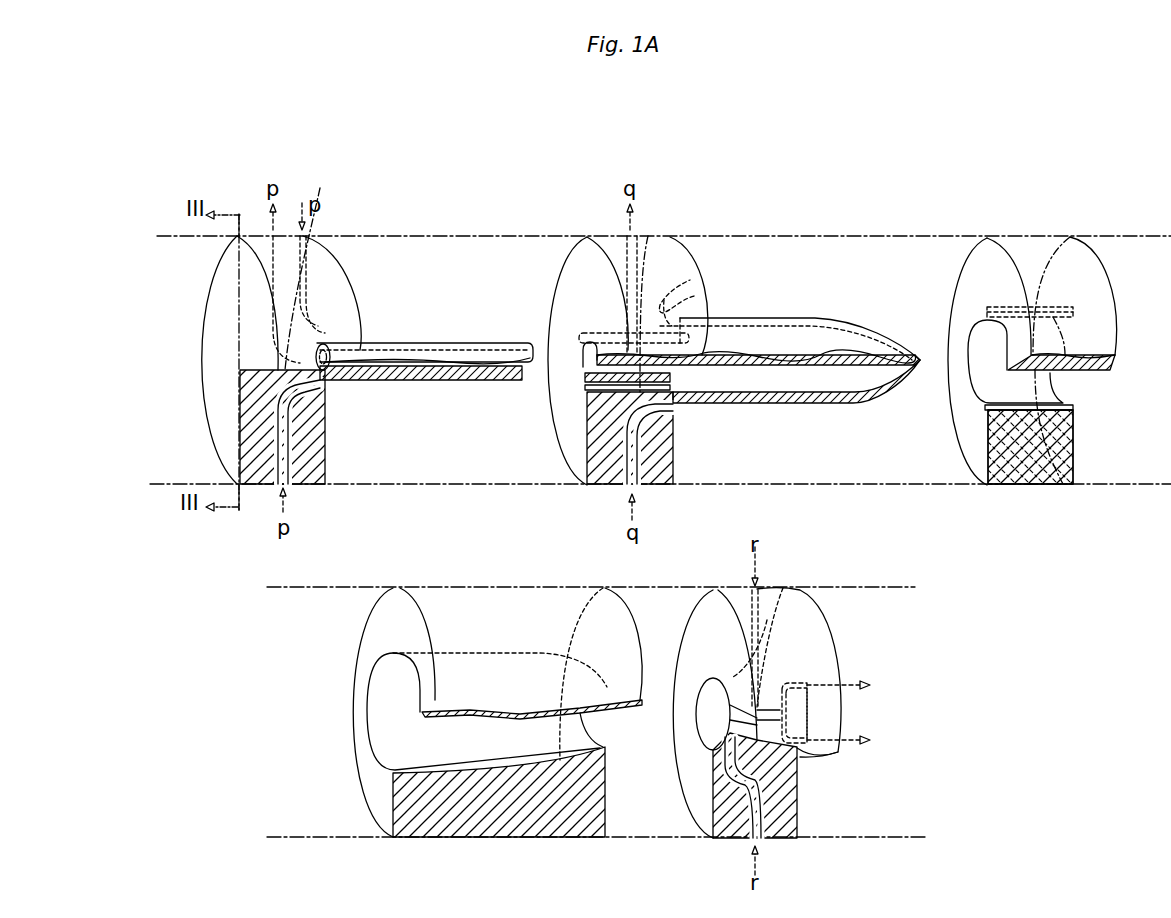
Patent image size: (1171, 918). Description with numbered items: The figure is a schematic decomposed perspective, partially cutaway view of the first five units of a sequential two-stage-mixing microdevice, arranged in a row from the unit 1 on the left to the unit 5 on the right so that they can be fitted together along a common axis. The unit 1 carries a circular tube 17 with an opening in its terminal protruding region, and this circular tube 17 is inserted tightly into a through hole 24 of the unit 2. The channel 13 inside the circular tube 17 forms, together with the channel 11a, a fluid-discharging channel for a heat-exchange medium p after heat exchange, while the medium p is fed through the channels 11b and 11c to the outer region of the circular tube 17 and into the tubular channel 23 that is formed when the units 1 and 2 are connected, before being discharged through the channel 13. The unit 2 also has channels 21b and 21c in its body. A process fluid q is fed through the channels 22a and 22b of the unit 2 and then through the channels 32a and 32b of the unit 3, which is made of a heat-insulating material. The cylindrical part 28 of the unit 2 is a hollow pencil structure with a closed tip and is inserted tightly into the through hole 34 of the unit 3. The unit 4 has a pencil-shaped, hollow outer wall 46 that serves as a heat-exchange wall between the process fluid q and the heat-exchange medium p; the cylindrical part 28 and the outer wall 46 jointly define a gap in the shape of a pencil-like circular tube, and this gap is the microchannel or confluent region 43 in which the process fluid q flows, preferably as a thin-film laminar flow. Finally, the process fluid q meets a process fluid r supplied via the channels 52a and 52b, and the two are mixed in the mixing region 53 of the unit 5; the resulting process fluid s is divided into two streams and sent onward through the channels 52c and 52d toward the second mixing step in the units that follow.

The unit 1 is at (367, 333).
The channel 11a is at (320, 190).
The channel 11b is at (303, 294).
The channel 11c is at (284, 437).
The channel 13 is at (405, 368).
The circular tube 17 is at (412, 352).
The unit 2 is at (704, 331).
The light guide path of second lens 21b is at (603, 333).
The lower plate of second lens 21c is at (590, 380).
The channel 22a is at (694, 296).
The channel 22b is at (637, 446).
The tubular channel 23 is at (770, 384).
The through hole 24 is at (582, 362).
The cylindrical part 28 is at (810, 338).
The unit 3 is at (1023, 329).
The channel 32a is at (1060, 295).
The channel 32b is at (1075, 412).
The through hole 34 is at (980, 374).
The unit 4 is at (453, 714).
The channel 43 is at (393, 736).
The outer wall 46 is at (470, 770).
The unit 5 is at (761, 706).
The channel 52a is at (783, 588).
The channel 52b is at (753, 807).
The channel 52c is at (803, 683).
The channel 52d is at (803, 753).
The channel 53 is at (705, 720).